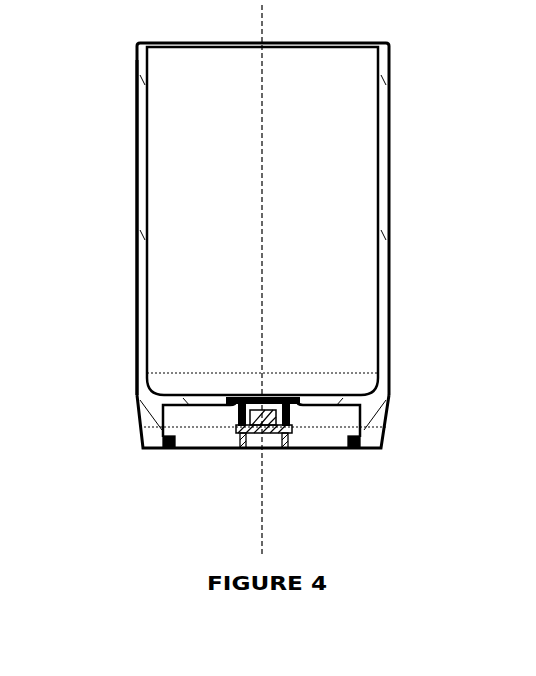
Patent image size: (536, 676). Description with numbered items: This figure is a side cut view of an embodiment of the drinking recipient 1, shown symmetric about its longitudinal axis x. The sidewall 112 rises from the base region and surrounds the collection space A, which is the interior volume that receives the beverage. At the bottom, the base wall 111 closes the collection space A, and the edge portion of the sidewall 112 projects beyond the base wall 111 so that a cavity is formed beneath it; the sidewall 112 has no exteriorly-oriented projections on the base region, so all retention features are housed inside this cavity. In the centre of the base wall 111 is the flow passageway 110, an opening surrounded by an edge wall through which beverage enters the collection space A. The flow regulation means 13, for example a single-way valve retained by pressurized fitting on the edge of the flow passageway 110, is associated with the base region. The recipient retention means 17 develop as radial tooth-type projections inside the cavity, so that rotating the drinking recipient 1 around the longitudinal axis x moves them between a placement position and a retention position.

The drinking recipient 1 is at (233, 219).
The sidewall 112 is at (103, 227).
The collection space A is at (262, 210).
The base wall 111 is at (262, 373).
The flow passageway 110 is at (256, 396).
The flow regulation means 13 is at (250, 445).
The recipient retention means 17 is at (364, 440).
The longitudinal axis x is at (278, 280).